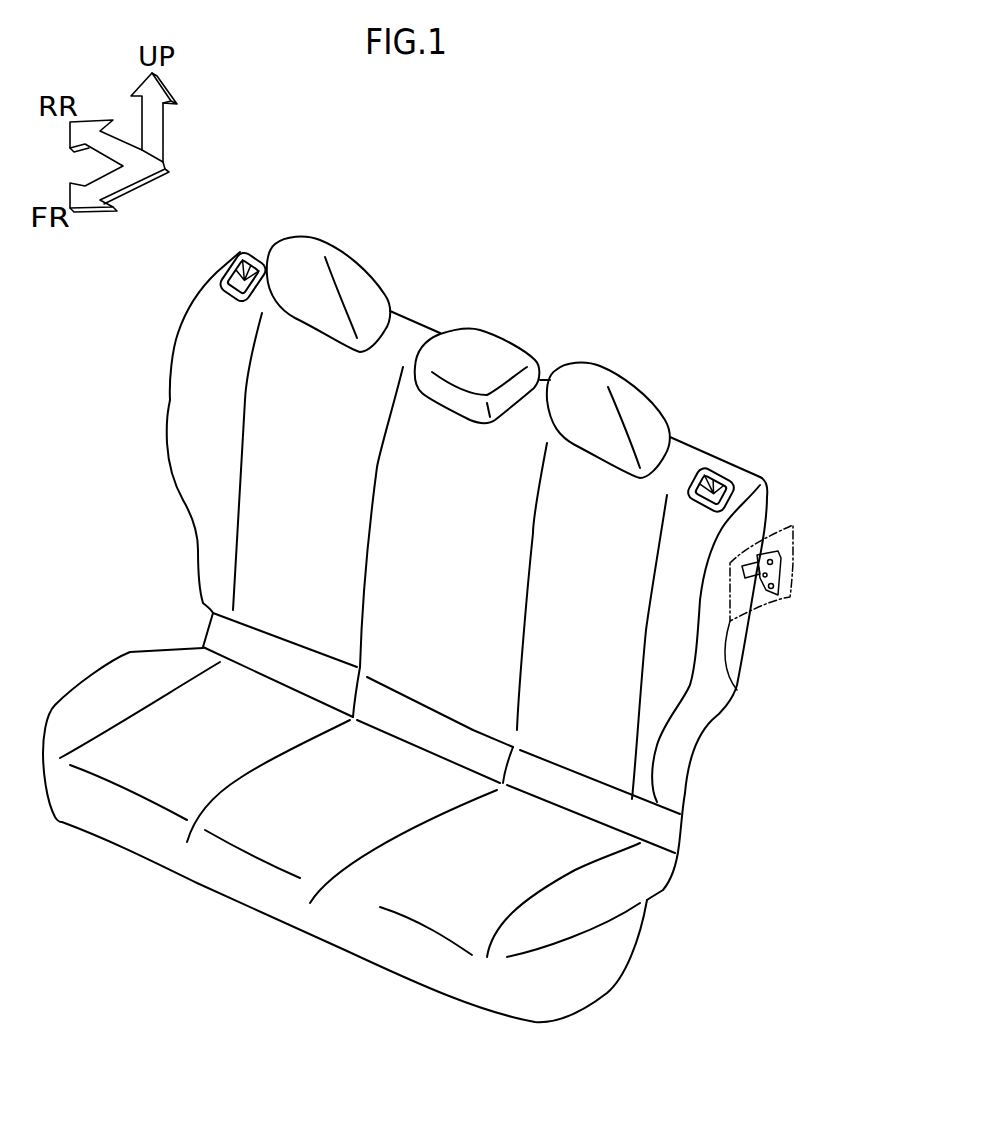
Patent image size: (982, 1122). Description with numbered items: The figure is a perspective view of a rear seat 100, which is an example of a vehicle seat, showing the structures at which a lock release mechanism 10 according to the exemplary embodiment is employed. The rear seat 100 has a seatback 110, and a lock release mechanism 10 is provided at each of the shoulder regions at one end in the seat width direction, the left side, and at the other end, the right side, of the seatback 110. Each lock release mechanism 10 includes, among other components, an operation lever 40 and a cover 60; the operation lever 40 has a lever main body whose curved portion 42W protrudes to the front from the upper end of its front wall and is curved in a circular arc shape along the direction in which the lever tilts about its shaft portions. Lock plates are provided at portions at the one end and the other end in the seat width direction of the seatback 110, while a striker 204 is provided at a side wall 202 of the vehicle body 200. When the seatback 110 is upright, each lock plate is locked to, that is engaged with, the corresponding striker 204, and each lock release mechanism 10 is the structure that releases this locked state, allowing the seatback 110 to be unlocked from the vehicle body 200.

The rear seat 100 is at (405, 630).
The seatback 110 is at (467, 576).
The lock release mechanism 10 is at (478, 374).
The operation lever 40 is at (262, 273).
The curved portion 42W is at (240, 265).
The cover 60 is at (232, 300).
The vehicle body 200 is at (773, 606).
The side wall 202 is at (793, 533).
The striker 204 is at (737, 691).